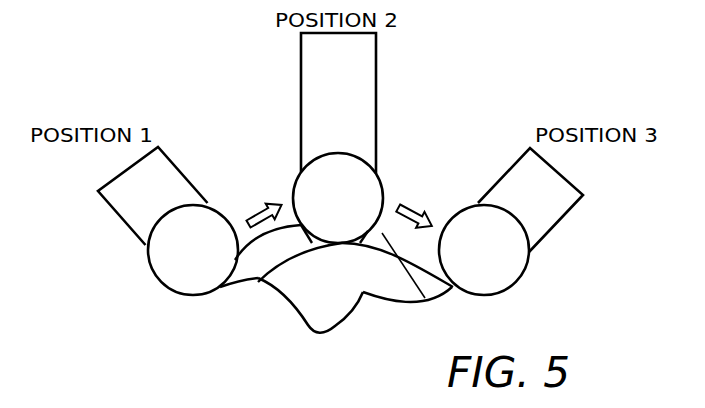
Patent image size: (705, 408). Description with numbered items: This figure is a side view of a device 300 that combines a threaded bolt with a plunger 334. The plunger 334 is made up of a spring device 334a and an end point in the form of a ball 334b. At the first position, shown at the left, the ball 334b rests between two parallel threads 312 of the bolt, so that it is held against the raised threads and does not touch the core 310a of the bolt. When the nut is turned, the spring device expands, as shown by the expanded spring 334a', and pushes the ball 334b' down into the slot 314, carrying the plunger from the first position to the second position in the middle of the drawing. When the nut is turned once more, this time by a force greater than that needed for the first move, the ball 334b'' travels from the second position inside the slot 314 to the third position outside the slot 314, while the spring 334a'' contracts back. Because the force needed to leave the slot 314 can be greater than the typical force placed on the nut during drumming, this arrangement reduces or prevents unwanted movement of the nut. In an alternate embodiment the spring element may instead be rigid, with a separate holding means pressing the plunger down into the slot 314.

The device 300 is at (155, 70).
The plunger 334 is at (181, 168).
The spring device 334a is at (120, 196).
The ball 334b is at (156, 254).
The expanded spring 334a' is at (292, 103).
The ball in slot 334b' is at (386, 195).
The contracted spring 334a'' is at (579, 200).
The ball outside slot 334b'' is at (535, 255).
The parallel threads 312 is at (254, 268).
The slot 314 is at (342, 245).
The core 310a is at (308, 302).